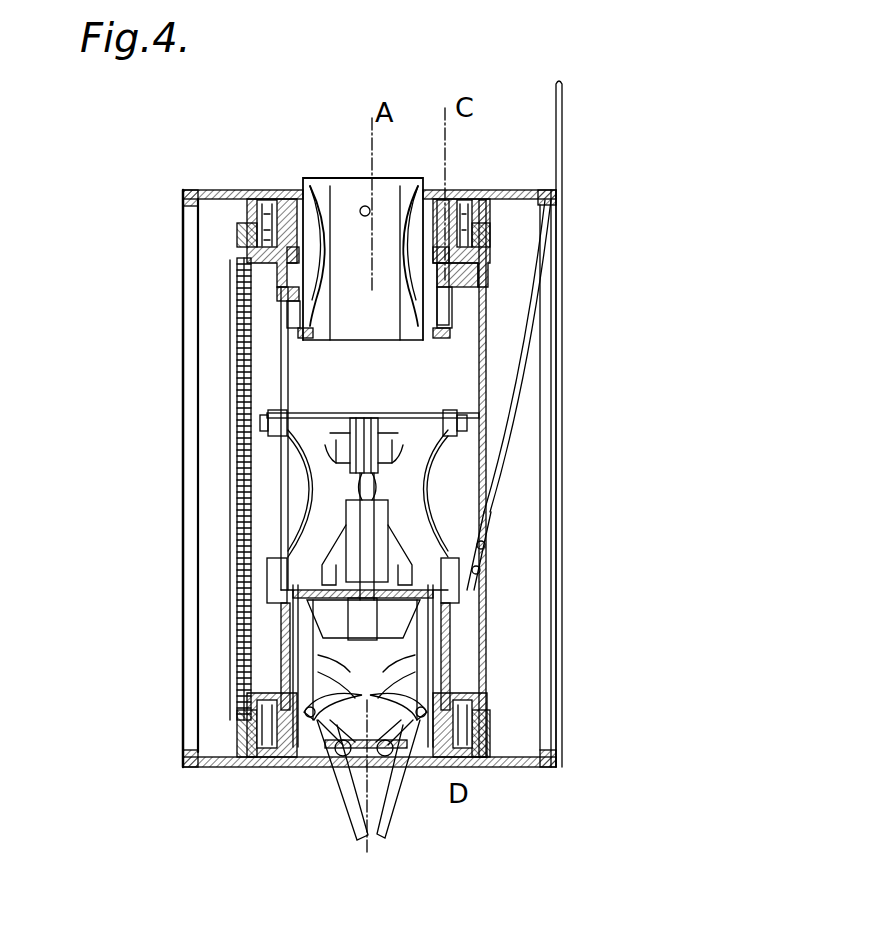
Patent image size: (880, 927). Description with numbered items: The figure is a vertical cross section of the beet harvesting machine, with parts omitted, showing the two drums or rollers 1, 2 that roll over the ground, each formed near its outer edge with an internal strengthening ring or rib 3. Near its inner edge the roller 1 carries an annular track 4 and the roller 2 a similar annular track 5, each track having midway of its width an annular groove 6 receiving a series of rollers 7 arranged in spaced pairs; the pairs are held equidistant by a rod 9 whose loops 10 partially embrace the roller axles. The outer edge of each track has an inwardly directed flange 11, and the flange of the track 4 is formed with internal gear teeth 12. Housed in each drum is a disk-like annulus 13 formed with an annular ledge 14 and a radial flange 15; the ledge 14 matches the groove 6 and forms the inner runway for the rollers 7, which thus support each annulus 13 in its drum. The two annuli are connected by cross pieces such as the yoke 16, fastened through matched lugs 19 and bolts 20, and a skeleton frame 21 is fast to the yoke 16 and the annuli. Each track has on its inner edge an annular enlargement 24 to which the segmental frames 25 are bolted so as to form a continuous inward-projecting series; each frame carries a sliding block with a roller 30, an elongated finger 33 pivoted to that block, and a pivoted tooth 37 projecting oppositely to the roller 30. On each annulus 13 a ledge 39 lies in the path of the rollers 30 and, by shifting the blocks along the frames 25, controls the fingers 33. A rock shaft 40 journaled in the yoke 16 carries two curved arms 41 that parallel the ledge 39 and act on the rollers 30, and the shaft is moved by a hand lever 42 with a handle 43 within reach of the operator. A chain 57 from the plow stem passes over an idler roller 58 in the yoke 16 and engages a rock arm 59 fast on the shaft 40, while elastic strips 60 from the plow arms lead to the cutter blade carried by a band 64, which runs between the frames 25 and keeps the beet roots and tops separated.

The drum or roller 1 is at (186, 192).
The drum or roller 2 is at (492, 212).
The internal strengthening ring or rib 3 is at (188, 197).
The annular track 4 is at (310, 186).
The annular track 5 is at (442, 236).
The annular groove 6 is at (270, 232).
The rollers 7 is at (245, 232).
The rod 9 is at (288, 240).
The loops 10 is at (278, 198).
The inwardly directed flange 11 is at (262, 201).
The gear teeth 12 is at (236, 278).
The disk-like annulus 13 is at (280, 262).
The annular ledge 14 is at (237, 270).
The radial flange 15 is at (250, 258).
The yoke 16 is at (320, 414).
The matched lugs 19 is at (448, 414).
The bolts 20 is at (468, 423).
The skeleton frame 21 is at (368, 346).
The annular enlargement 24 is at (320, 238).
The segmental frames 25 is at (322, 232).
The roller 30 is at (280, 292).
The elongated finger 33 is at (343, 795).
The tooth 37 is at (335, 300).
The ledge 39 is at (299, 290).
The rock shaft 40 is at (320, 590).
The arms 41 is at (452, 640).
The hand lever 42 is at (500, 475).
The handle 43 is at (563, 98).
The chain 57 is at (352, 482).
The idler roller 58 is at (365, 418).
The rock arm 59 is at (365, 530).
The elastic strips 60 is at (345, 752).
The band 64 is at (365, 719).